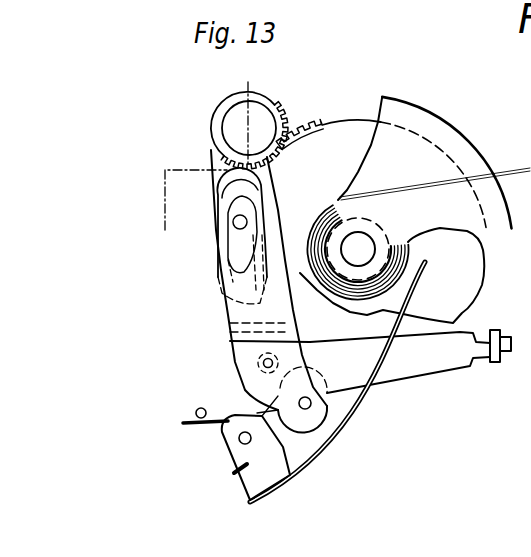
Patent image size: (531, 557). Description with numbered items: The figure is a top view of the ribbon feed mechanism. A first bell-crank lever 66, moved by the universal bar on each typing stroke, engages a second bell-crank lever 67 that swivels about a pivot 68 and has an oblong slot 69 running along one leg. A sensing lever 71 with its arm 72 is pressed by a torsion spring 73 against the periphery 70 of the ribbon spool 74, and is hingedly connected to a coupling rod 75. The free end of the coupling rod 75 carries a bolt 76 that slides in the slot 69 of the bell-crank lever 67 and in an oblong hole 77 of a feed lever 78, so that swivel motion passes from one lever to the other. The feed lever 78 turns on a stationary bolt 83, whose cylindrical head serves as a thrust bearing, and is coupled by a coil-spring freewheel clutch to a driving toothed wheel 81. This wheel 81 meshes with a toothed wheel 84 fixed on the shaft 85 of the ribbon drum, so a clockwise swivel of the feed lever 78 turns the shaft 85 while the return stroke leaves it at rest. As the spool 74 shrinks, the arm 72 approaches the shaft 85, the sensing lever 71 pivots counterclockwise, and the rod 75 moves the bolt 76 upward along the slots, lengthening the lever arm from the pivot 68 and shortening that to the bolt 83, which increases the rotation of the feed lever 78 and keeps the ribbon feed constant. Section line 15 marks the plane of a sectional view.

The section line 15- 15 is at (248, 66).
The bell-crank lever 66 is at (497, 362).
The second bell-crank lever 67 is at (440, 358).
The pivot 68 is at (267, 367).
The oblong slot 69 is at (257, 243).
The periphery 70 is at (348, 203).
The sensing lever 71 is at (260, 473).
The arm 72 is at (371, 392).
The torsion spring 73 is at (199, 422).
The ribbon spool 74 is at (453, 220).
The coupling rod 75 is at (267, 310).
The bolt 76 is at (250, 217).
The oblong hole 77 is at (228, 193).
The feed lever 78 is at (230, 178).
The driving toothed wheel 81 is at (212, 113).
The stationary bolt 83 is at (232, 139).
The toothed wheel 84 is at (325, 142).
The shaft 85 is at (359, 240).